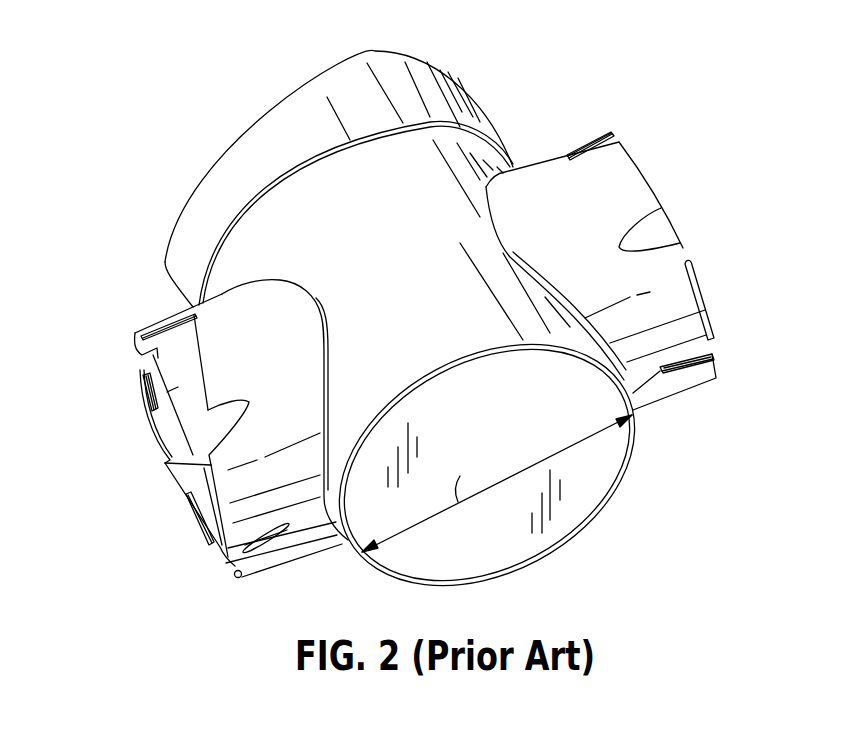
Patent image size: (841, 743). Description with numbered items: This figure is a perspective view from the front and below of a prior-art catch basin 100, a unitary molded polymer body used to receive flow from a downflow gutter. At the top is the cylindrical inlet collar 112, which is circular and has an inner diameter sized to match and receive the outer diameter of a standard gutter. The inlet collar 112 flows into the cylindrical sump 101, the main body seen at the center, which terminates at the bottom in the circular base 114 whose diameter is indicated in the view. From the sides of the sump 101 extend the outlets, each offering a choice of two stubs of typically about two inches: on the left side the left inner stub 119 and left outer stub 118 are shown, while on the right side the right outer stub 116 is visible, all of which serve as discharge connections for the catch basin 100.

The catch basin 100 is at (642, 87).
The cylindrical sump 101 is at (430, 288).
The cylindrical inlet collar 112 is at (458, 112).
The circular base 114 is at (575, 507).
The right outer stub 116 is at (620, 188).
The left outer stub 118 is at (190, 373).
The left inner stub 119 is at (163, 415).